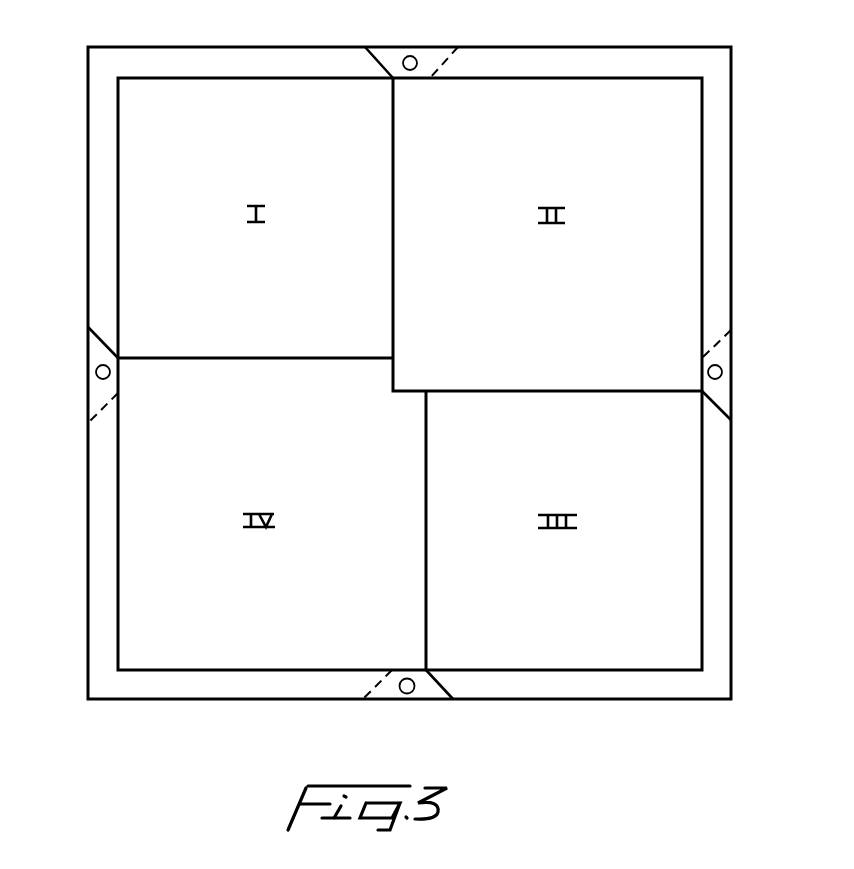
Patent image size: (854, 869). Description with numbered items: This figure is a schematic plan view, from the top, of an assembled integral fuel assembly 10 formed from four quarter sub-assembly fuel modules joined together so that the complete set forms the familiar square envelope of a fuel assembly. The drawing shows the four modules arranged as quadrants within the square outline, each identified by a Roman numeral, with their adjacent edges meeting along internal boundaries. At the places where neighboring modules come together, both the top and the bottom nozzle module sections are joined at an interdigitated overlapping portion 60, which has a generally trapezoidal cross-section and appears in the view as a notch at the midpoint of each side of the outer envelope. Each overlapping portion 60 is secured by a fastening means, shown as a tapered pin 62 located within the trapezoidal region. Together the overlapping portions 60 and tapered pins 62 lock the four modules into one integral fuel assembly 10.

The roof/wall panel assembly 10 is at (741, 180).
The interdigitated overlapping portion 60 is at (437, 52).
The tapered pin 62 is at (412, 57).